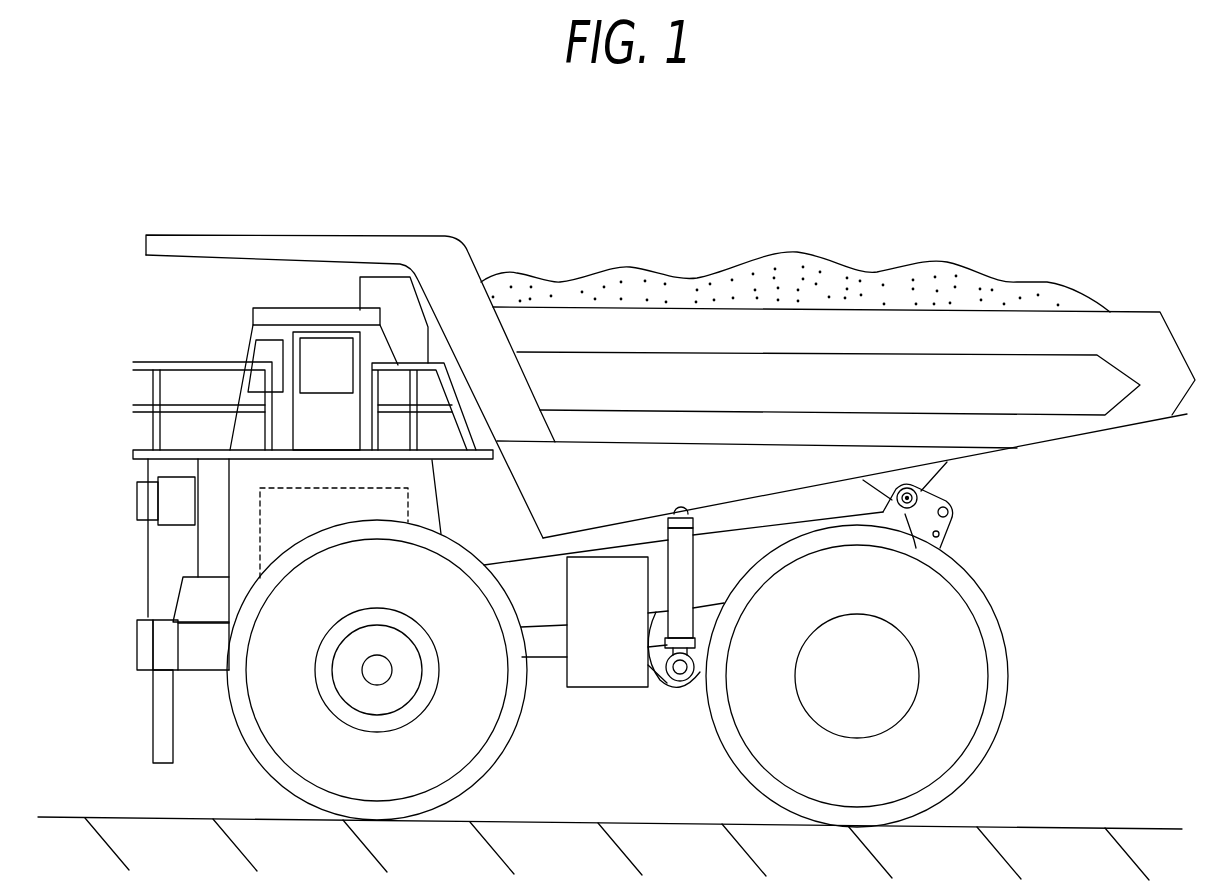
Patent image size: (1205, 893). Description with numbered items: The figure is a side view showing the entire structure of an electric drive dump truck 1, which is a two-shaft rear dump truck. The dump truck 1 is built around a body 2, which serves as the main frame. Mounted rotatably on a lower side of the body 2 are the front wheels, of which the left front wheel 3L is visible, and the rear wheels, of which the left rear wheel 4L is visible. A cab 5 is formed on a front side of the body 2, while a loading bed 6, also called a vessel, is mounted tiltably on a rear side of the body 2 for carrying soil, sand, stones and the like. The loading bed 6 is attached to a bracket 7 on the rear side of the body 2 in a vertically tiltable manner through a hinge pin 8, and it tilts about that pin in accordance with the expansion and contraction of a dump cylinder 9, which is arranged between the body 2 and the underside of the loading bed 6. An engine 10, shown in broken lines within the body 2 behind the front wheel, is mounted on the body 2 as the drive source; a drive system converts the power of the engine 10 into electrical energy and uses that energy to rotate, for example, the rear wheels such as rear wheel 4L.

The dump truck 1 is at (516, 243).
The body 2 is at (546, 611).
The front wheel 3L is at (288, 743).
The rear wheel 4L is at (972, 674).
The cab 5 is at (262, 329).
The loading bed 6 is at (655, 328).
The bracket 7 is at (925, 518).
The hinge pin 8 is at (918, 488).
The dump cylinder 9 is at (672, 620).
The engine 10 is at (275, 535).